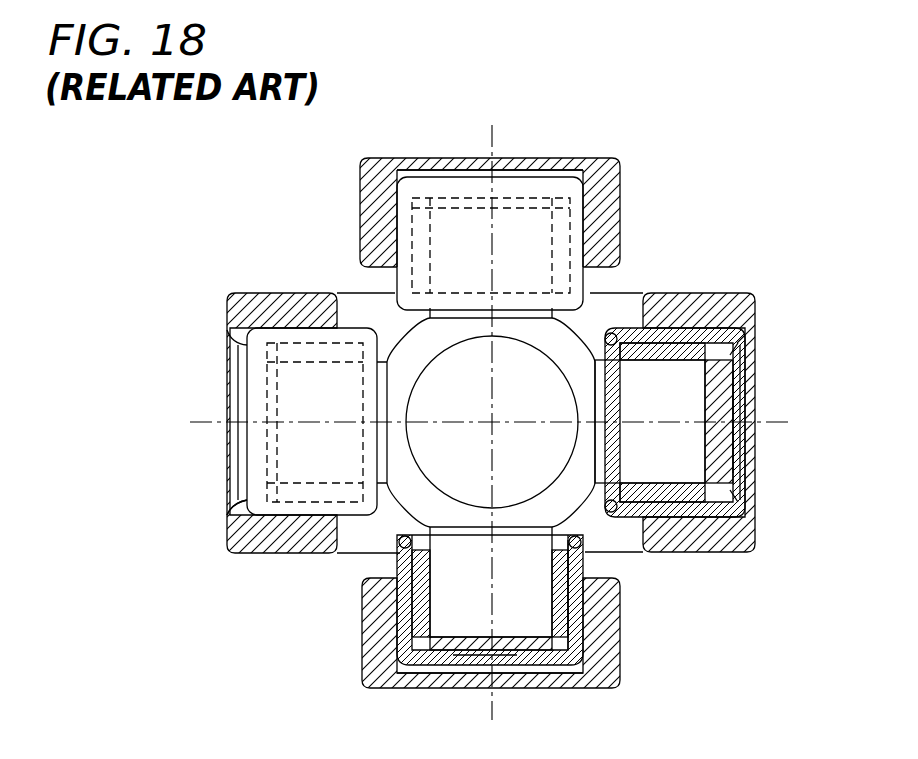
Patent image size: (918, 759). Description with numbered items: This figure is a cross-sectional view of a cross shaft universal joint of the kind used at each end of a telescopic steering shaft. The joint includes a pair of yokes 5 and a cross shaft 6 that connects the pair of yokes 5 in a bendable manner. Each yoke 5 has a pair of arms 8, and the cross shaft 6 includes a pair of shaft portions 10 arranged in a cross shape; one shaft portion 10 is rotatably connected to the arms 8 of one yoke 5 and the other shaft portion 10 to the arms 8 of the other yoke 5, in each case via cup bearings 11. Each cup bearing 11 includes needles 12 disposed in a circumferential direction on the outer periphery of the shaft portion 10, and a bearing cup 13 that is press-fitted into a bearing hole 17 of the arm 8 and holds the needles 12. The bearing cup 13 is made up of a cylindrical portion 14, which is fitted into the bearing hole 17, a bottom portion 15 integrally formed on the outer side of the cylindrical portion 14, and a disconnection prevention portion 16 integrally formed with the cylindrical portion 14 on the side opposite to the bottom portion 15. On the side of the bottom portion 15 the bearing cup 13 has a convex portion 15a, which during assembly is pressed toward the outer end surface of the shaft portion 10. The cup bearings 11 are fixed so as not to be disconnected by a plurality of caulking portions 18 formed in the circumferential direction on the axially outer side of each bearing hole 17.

The yoke 5 is at (324, 171).
The cross shaft 6 is at (591, 313).
The arm 8 is at (305, 303).
The shaft portion 10 is at (567, 227).
The cup bearing 11 is at (592, 605).
The needle 12 is at (658, 493).
The bearing cup 13 is at (688, 323).
The cylindrical portion 14 is at (577, 618).
The bottom portion 15 is at (723, 472).
The convex portion 15a is at (713, 408).
The disconnection prevention portion 16 is at (608, 336).
The bearing hole 17 is at (683, 513).
The caulking portion 18 is at (413, 170).